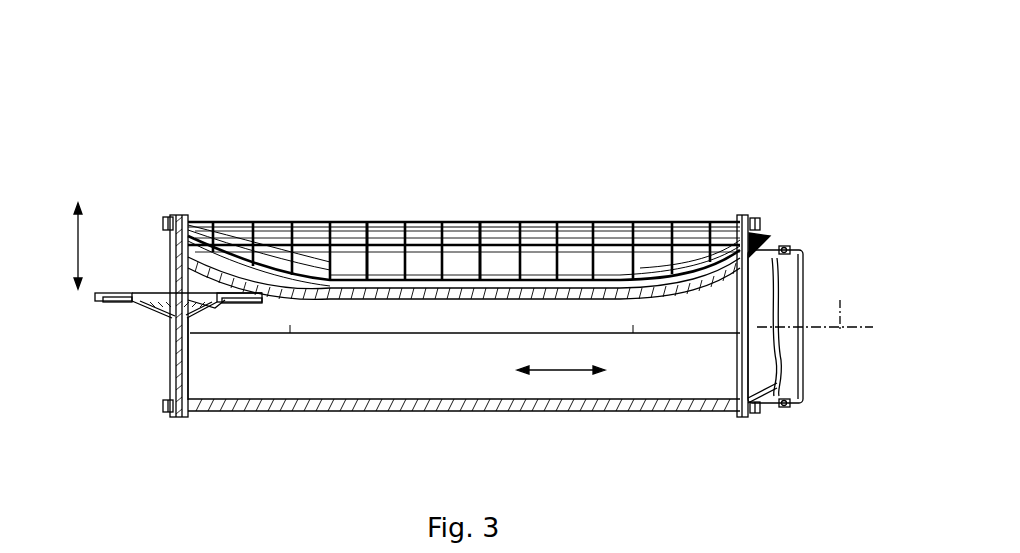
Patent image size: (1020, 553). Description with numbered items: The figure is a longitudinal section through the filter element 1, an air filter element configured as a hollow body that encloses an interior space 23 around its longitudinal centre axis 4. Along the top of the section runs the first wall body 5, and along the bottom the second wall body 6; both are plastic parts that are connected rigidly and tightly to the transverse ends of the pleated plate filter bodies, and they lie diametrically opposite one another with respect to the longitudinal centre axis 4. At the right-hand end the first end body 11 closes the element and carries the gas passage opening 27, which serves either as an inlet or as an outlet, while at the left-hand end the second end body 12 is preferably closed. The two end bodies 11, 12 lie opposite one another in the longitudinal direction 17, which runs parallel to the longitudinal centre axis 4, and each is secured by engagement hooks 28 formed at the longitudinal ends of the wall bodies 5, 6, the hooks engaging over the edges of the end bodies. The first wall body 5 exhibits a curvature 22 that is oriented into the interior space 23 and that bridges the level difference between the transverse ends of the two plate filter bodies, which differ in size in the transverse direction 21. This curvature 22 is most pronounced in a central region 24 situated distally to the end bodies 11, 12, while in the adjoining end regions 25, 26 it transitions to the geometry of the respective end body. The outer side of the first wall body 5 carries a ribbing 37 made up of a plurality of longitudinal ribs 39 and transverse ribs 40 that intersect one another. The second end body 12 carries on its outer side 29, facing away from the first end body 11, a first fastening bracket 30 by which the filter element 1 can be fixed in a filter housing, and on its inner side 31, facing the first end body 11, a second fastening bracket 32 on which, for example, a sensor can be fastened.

The filter element 1 is at (730, 165).
The longitudinal centre axis 4 is at (840, 300).
The first wall body 5 is at (347, 280).
The second wall body 6 is at (368, 410).
The first end body 11 is at (762, 239).
The second end body 12 is at (170, 352).
The longitudinal direction 17 is at (558, 375).
The transverse direction 21 is at (62, 240).
The curvature 22 is at (533, 287).
The interior space 23 is at (382, 379).
The central region 24 is at (460, 334).
The end region 25 is at (688, 334).
The end region 26 is at (240, 334).
The gas passage opening 27 is at (790, 350).
The engagement hook 28 is at (163, 222).
The outer side 29 is at (170, 328).
The first fastening bracket 30 is at (150, 295).
The inner side 31 is at (183, 370).
The second fastening bracket 32 is at (210, 297).
The ribbing 37 is at (420, 226).
The longitudinal rib 39 is at (308, 222).
The transverse rib 40 is at (486, 260).